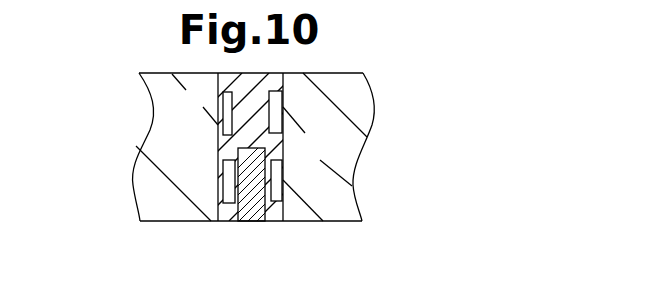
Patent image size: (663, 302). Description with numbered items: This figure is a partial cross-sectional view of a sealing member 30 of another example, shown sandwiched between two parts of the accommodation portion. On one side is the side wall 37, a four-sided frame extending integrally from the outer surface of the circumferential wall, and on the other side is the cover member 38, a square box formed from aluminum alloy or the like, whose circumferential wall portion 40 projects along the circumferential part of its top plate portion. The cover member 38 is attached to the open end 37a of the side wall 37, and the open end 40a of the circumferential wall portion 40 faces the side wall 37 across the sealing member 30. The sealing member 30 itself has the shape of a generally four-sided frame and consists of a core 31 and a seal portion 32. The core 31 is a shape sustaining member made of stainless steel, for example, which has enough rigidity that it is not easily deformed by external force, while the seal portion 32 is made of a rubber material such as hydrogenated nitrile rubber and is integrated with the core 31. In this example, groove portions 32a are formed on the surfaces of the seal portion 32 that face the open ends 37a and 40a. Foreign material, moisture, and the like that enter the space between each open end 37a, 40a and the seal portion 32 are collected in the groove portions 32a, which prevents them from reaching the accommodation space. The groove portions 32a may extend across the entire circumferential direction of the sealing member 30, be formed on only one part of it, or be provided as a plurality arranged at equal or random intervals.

The sealing member 30 is at (262, 183).
The core 31 is at (255, 221).
The seal portion 32 is at (228, 221).
The groove portions 32a is at (222, 128).
The side wall 37 is at (170, 221).
The open end of the side wall 37a is at (221, 97).
The cover member 38 is at (374, 110).
The circumferential wall portion 40 is at (343, 221).
The open end of the circumferential wall portion 40a is at (279, 143).